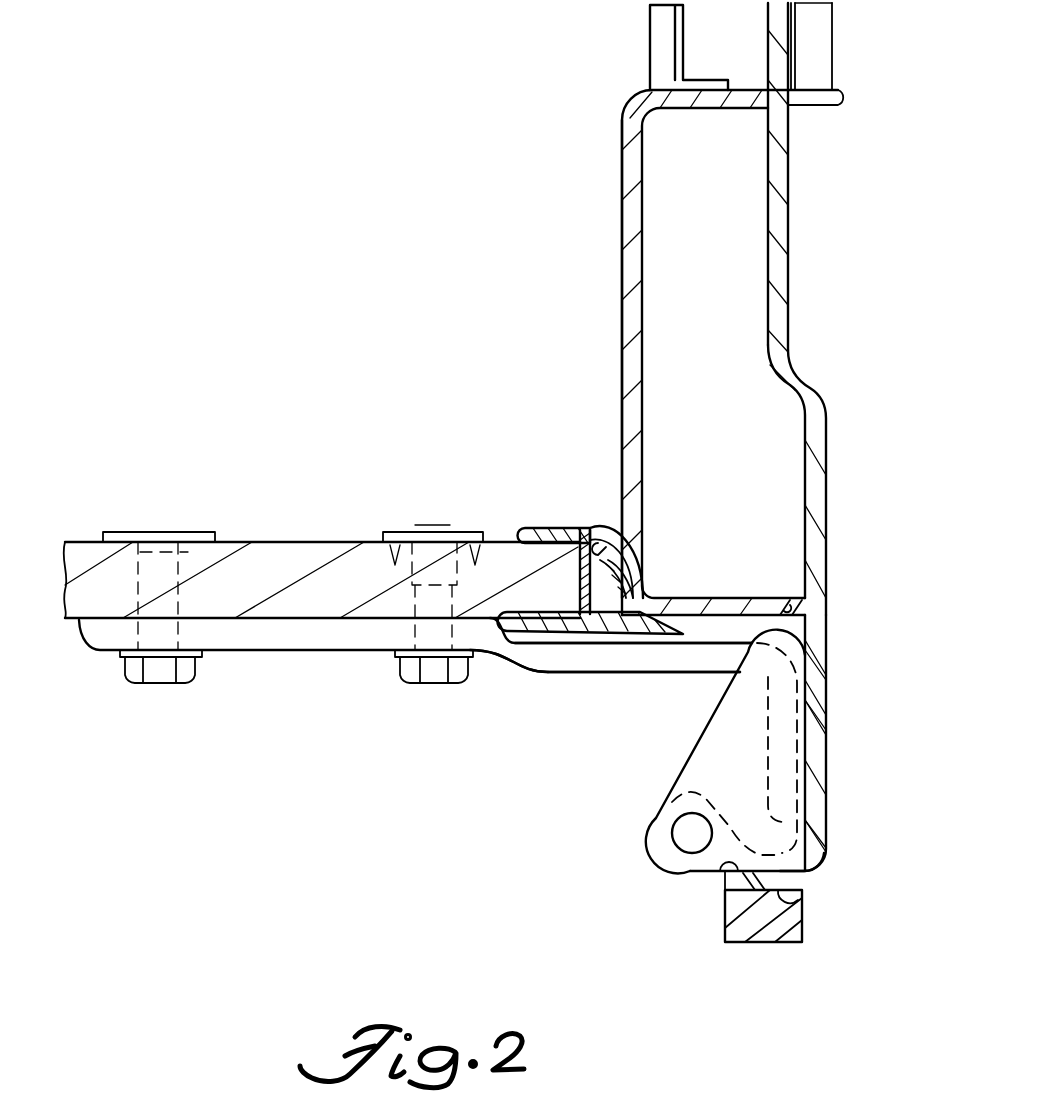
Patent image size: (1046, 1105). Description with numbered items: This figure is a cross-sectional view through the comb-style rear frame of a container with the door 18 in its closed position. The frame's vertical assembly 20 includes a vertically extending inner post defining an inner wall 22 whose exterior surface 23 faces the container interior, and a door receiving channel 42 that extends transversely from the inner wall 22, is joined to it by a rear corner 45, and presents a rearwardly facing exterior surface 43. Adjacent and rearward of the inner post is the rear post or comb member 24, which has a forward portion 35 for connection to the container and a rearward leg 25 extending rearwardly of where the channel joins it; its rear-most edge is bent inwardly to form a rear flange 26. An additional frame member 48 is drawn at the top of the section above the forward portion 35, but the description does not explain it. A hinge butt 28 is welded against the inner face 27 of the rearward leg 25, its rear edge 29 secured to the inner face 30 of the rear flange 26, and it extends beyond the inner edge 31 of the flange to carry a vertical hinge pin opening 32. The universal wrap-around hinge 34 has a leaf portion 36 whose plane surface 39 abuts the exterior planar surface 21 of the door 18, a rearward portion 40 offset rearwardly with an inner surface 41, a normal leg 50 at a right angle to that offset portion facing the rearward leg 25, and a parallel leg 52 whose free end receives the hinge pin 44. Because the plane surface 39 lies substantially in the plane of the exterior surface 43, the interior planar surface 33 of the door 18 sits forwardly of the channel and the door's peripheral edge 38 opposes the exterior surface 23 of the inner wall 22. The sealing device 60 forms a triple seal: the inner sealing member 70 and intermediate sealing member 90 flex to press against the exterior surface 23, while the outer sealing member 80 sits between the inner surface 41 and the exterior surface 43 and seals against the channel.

The door 18 is at (80, 546).
The vertical assembly 20 is at (818, 340).
The exterior planar surface 21 is at (78, 622).
The inner wall 22 is at (625, 362).
The exterior surface of inner wall 23 is at (624, 398).
The rear post 24 is at (838, 733).
The rearward leg 25 is at (815, 680).
The rear flange 26 is at (783, 880).
The inner face of rearward leg 27 is at (805, 660).
The hinge butt 28 is at (725, 742).
The rear edge of butt 29 is at (800, 905).
The inner face of rear flange 30 is at (717, 876).
The inner edge of rear flange 31 is at (722, 882).
The hinge pin opening 32 is at (672, 833).
The interior planar surface 33 is at (112, 535).
The universal wrap-around hinge 34 is at (558, 710).
The forward portion 35 is at (828, 498).
The leaf portion 36 is at (275, 645).
The peripheral edge 38 is at (578, 556).
The plane surface 39 is at (218, 595).
The rearward portion 40 is at (600, 660).
The inner surface 41 is at (700, 662).
The door receiving channel 42 is at (735, 598).
The exterior surface of door receiving channel 43 is at (800, 608).
The hinge pin 44 is at (665, 803).
The rear corner 45 is at (636, 575).
The upper member 48 is at (822, 60).
The normal leg 50 is at (808, 712).
The parallel leg 52 is at (805, 830).
The sealing device 60 is at (609, 518).
The inner sealing member 70 is at (628, 522).
The outer sealing member 80 is at (612, 650).
The intermediate sealing member 90 is at (608, 550).